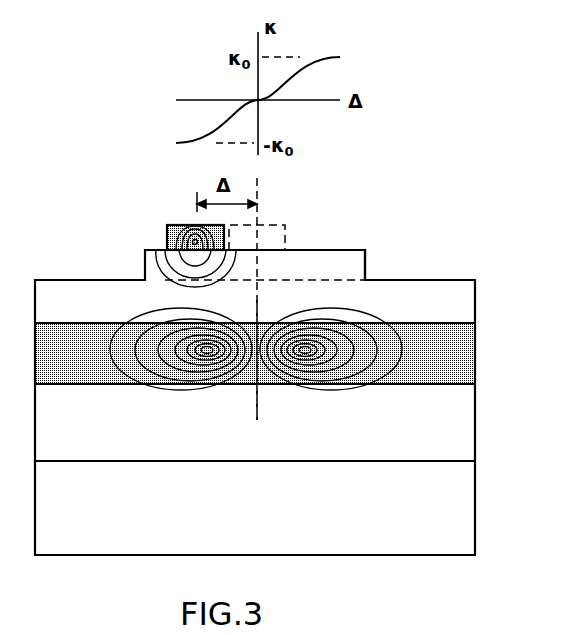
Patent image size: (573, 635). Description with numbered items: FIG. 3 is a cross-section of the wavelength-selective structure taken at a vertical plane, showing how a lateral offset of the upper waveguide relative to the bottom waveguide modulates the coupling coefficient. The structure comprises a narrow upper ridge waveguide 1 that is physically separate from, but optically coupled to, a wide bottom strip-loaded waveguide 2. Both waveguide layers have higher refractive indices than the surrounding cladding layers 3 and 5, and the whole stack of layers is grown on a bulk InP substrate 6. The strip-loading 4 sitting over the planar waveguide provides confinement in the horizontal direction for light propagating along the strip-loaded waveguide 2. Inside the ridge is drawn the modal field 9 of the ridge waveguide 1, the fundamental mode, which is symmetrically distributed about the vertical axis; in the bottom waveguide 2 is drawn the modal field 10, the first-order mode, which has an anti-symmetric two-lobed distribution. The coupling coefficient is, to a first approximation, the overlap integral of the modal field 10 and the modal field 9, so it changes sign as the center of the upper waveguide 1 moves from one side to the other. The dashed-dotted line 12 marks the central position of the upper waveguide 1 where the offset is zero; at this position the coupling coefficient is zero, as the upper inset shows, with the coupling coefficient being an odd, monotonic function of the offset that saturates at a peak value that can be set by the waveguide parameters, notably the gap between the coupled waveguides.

The upper ridge waveguide 1 is at (167, 228).
The bottom strip-loaded waveguide 2 is at (456, 351).
The upper cladding layer 3 is at (53, 296).
The strip-loading 4 is at (340, 261).
The lower cladding layer 5 is at (455, 428).
The InP substrate 6 is at (455, 520).
The modal field of the ridge waveguide 9 is at (166, 240).
The modal field of the bottom waveguide 10 is at (151, 360).
The central position line 12 is at (256, 413).